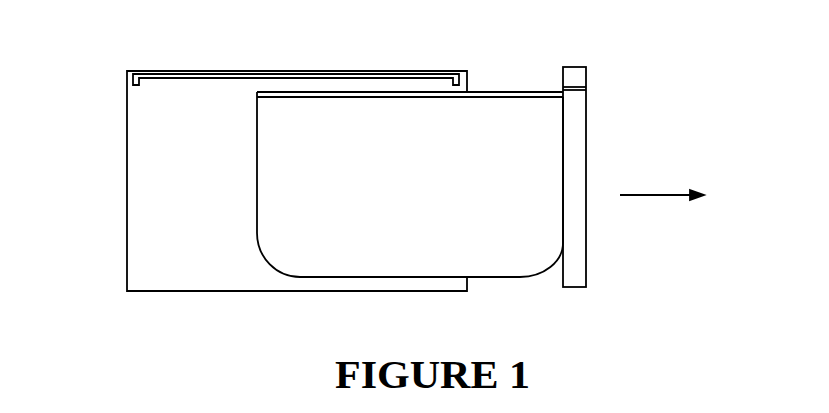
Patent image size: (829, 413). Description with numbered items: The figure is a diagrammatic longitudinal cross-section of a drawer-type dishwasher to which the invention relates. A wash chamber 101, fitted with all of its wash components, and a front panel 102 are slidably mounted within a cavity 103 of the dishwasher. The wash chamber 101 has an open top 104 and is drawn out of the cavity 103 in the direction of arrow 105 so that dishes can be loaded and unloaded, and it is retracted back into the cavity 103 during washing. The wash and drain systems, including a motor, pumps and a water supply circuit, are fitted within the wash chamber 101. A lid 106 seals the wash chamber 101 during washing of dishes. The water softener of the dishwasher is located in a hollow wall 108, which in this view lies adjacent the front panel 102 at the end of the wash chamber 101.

The wash chamber 101 is at (505, 263).
The front panel 102 is at (587, 150).
The cavity 103 is at (143, 262).
The open top 104 is at (487, 91).
The arrow 105 is at (665, 188).
The lid 106 is at (268, 75).
The hollow wall 108 is at (560, 147).